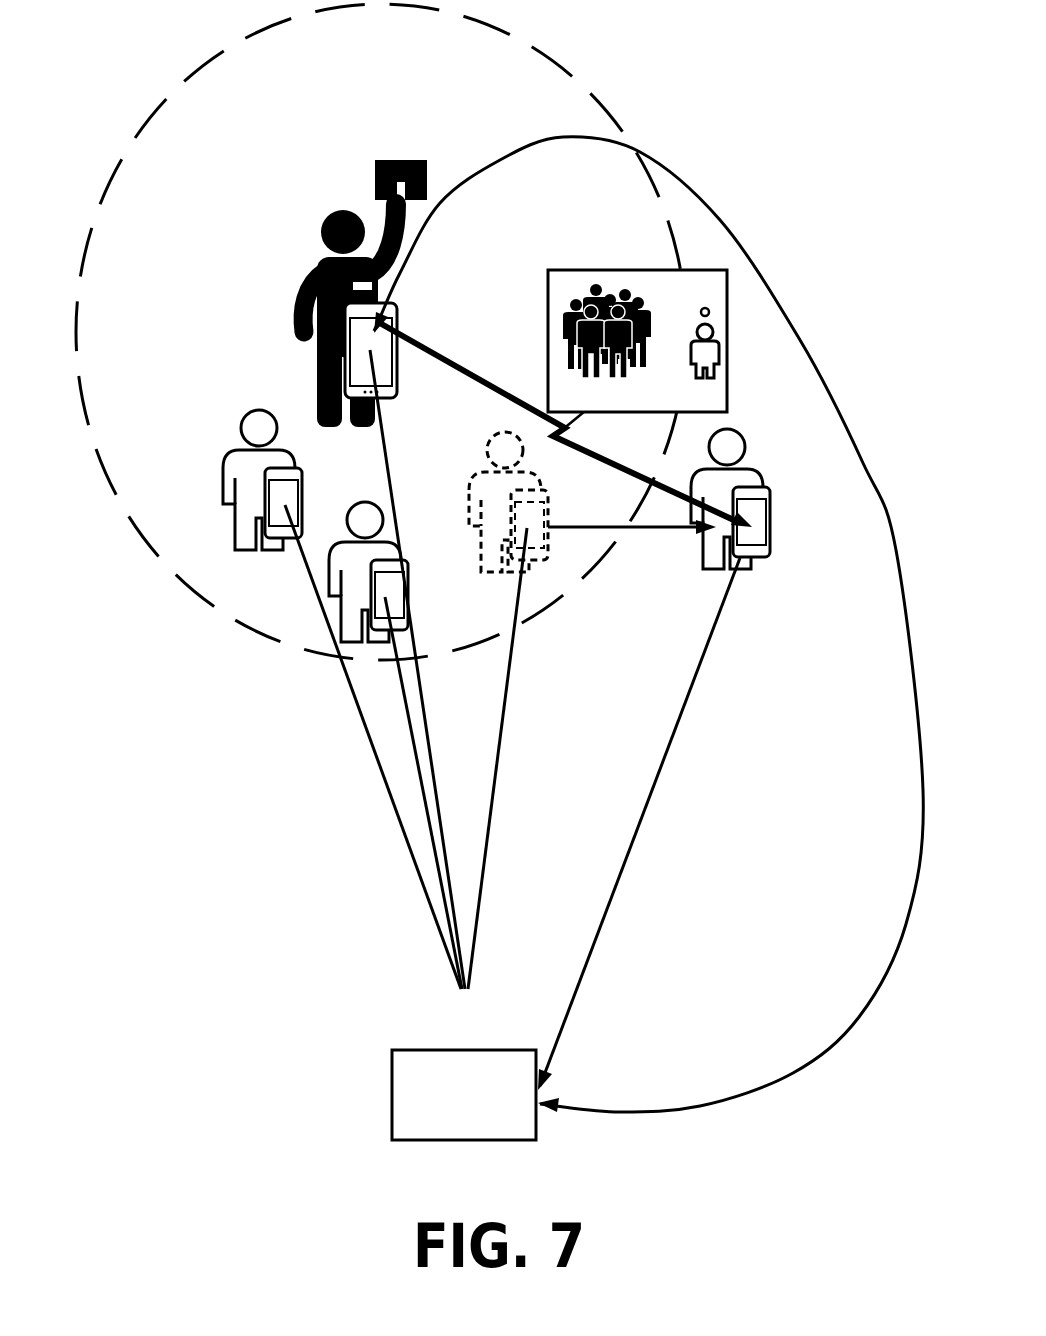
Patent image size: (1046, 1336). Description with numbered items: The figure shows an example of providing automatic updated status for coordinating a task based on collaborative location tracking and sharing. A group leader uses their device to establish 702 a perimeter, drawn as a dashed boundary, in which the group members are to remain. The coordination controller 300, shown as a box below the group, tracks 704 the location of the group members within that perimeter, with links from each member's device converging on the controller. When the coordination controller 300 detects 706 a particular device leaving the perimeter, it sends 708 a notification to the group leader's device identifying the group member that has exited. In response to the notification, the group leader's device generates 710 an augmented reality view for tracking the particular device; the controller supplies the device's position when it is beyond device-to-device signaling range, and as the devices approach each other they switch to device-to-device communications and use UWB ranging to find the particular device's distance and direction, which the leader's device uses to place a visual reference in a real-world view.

The establishing a perimeter 702 is at (345, 352).
The tracking the location of the group members 704 is at (406, 701).
The detecting a particular device leaving the perimeter 706 is at (632, 527).
The sending a notification 708 is at (648, 624).
The generating an augmented reality view 710 is at (532, 336).
The coordination controller 300 is at (464, 1095).